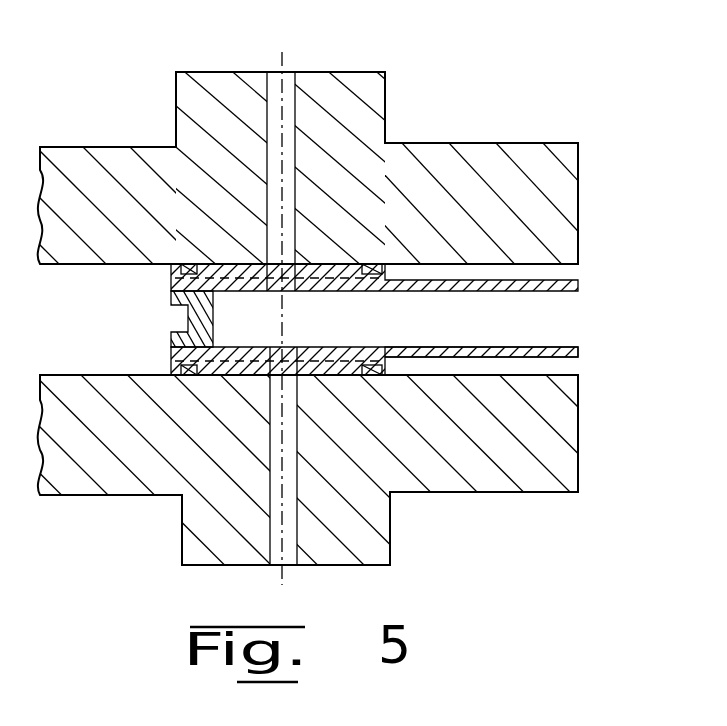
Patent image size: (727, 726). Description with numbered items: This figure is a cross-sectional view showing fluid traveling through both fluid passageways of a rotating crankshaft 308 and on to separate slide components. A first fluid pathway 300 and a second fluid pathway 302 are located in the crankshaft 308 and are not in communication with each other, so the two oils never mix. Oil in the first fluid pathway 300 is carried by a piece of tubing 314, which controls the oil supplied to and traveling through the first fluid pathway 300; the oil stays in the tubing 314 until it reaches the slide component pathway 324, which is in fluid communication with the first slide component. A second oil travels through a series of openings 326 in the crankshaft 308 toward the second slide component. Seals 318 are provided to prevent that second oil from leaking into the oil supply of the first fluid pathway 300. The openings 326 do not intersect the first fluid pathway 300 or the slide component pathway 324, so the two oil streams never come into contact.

The first fluid pathway 300 is at (458, 318).
The second fluid pathway 302 is at (502, 272).
The crankshaft 308 is at (483, 157).
The tubing 314 is at (438, 354).
The seals 318 is at (187, 264).
The slide component pathway 324 is at (280, 173).
The openings 326 is at (188, 268).